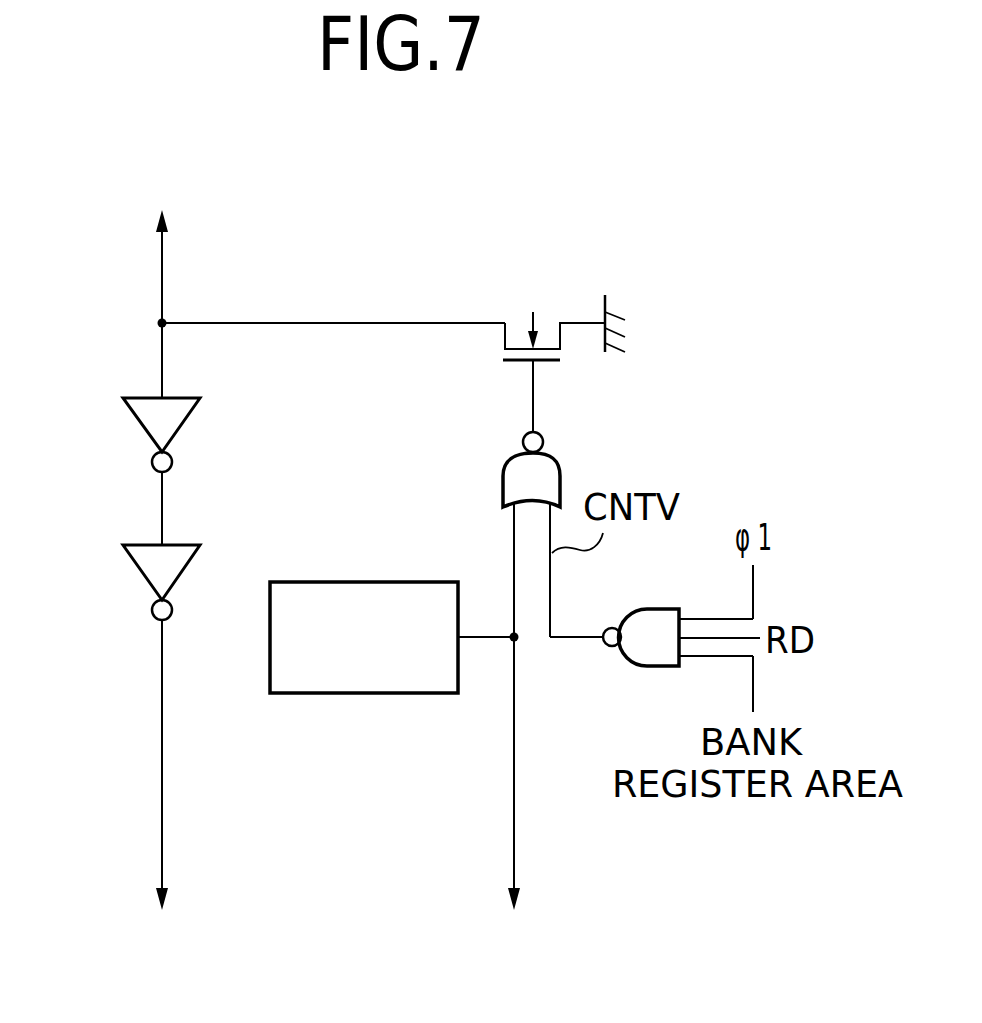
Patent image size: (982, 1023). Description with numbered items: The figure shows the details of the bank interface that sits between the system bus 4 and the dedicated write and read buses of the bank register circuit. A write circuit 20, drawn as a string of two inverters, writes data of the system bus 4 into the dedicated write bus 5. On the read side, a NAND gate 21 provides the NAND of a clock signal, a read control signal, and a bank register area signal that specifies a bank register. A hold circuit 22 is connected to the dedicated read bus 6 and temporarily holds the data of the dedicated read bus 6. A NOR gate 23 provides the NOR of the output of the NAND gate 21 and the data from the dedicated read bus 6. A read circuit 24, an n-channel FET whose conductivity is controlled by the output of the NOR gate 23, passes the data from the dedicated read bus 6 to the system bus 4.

The system bus 4 is at (300, 283).
The dedicated write bus 5 is at (168, 793).
The dedicated read bus 6 is at (516, 801).
The write circuit 20 is at (100, 398).
The NAND gate 21 is at (642, 667).
The hold circuit 22 is at (422, 581).
The NOR gate 23 is at (518, 466).
The read circuit 24 is at (497, 352).